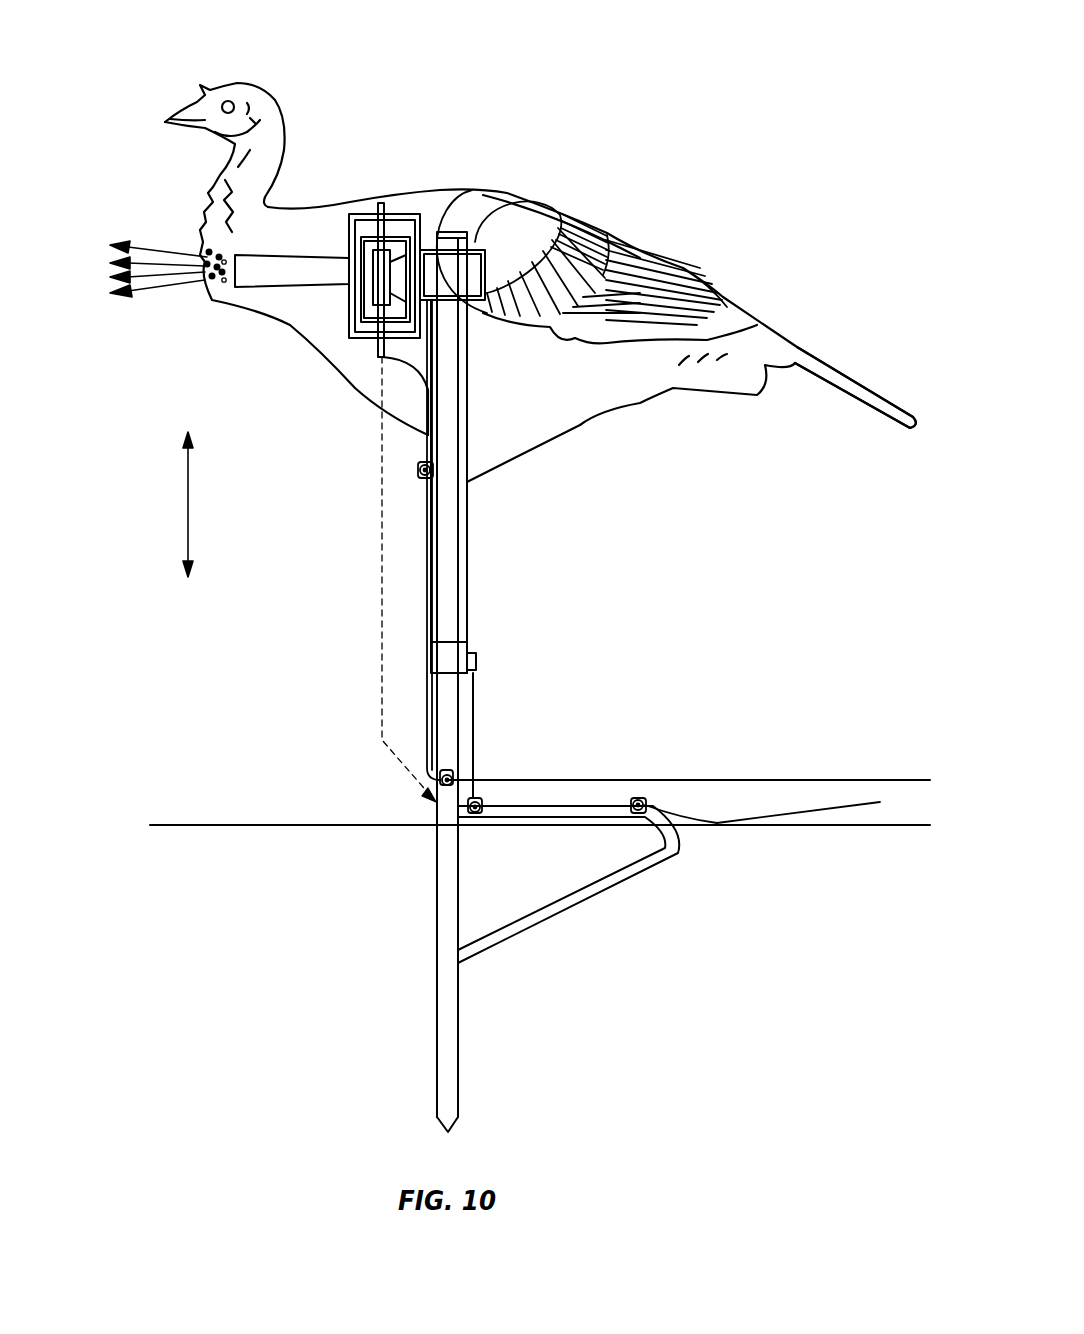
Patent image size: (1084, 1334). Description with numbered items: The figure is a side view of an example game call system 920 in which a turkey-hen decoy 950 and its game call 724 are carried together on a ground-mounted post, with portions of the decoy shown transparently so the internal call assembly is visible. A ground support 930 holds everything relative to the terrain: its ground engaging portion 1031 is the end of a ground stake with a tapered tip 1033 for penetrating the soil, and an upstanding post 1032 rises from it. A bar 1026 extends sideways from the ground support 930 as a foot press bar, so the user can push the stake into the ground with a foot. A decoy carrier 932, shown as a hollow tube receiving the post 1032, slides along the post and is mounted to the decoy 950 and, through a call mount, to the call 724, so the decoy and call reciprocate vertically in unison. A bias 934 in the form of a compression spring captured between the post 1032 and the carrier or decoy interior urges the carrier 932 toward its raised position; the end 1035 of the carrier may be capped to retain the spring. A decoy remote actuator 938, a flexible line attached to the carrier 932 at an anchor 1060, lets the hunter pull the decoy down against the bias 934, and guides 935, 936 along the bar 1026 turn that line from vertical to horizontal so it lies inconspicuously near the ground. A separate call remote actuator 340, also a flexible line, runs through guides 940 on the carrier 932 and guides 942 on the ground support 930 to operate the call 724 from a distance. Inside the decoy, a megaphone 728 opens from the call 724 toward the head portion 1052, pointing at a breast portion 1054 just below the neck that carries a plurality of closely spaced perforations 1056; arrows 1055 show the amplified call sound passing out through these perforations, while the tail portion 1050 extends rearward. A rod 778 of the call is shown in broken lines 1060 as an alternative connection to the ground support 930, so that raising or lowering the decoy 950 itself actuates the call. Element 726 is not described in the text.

The head portion 1052 is at (265, 88).
The breast portion 1054 is at (198, 243).
The arrows 1055 is at (140, 297).
The perforations 1056 is at (210, 262).
The megaphone 728 is at (288, 287).
The outer bracket 726 is at (349, 313).
The game call 724 is at (373, 322).
The rod 778 is at (380, 357).
The end of carrier 1035 is at (448, 232).
The tapered tip / call mount 1033 is at (437, 1120).
The decoy 950 is at (670, 258).
The tail portion 1050 is at (797, 347).
The game call system 920 is at (845, 133).
The guides 940 is at (420, 470).
The decoy carrier 932 is at (467, 540).
The bias 934 is at (437, 550).
The guide 935 is at (468, 640).
The anchor 1060 is at (382, 642).
The upstanding post 1032 is at (460, 718).
The ground support 930 is at (436, 803).
The guides 936 is at (452, 776).
The call remote actuator 340 is at (755, 778).
The decoy remote actuator 938 is at (847, 810).
The guides 942 is at (437, 827).
The bar 1026 is at (540, 820).
The ground engaging portion 1031 is at (437, 905).